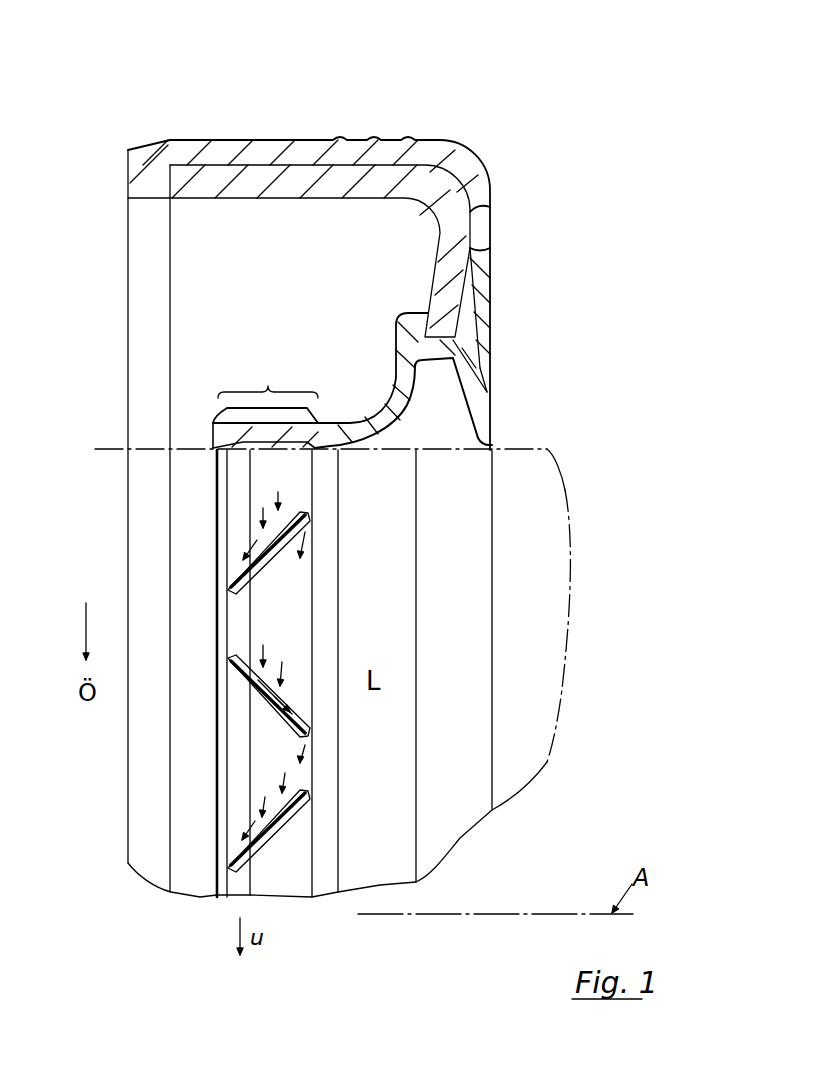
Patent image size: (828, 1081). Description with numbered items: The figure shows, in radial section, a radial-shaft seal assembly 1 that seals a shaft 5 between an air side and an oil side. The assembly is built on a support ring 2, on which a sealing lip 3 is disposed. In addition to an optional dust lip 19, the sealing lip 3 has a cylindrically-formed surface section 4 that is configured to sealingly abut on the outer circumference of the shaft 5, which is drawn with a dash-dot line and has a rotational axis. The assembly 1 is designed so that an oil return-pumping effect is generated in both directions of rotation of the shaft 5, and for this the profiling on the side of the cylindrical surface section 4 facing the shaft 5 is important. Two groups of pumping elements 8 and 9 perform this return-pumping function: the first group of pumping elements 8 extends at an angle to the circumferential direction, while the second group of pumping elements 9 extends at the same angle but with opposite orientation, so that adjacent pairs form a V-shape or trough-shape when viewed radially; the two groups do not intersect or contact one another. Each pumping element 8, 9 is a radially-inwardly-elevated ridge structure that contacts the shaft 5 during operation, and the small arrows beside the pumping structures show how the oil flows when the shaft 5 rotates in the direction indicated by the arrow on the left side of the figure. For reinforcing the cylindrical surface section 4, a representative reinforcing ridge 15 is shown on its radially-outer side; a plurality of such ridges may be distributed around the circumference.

The radial-shaft seal assembly 1 is at (460, 110).
The support ring 2 is at (452, 247).
The sealing lip 3 is at (398, 392).
The cylindrical surface section 4 is at (268, 378).
The shaft 5 is at (519, 447).
The first group of pumping elements 8 is at (284, 566).
The second group of pumping elements 9 is at (296, 693).
The reinforcing ridge 15 is at (236, 418).
The dust lip 19 is at (479, 420).